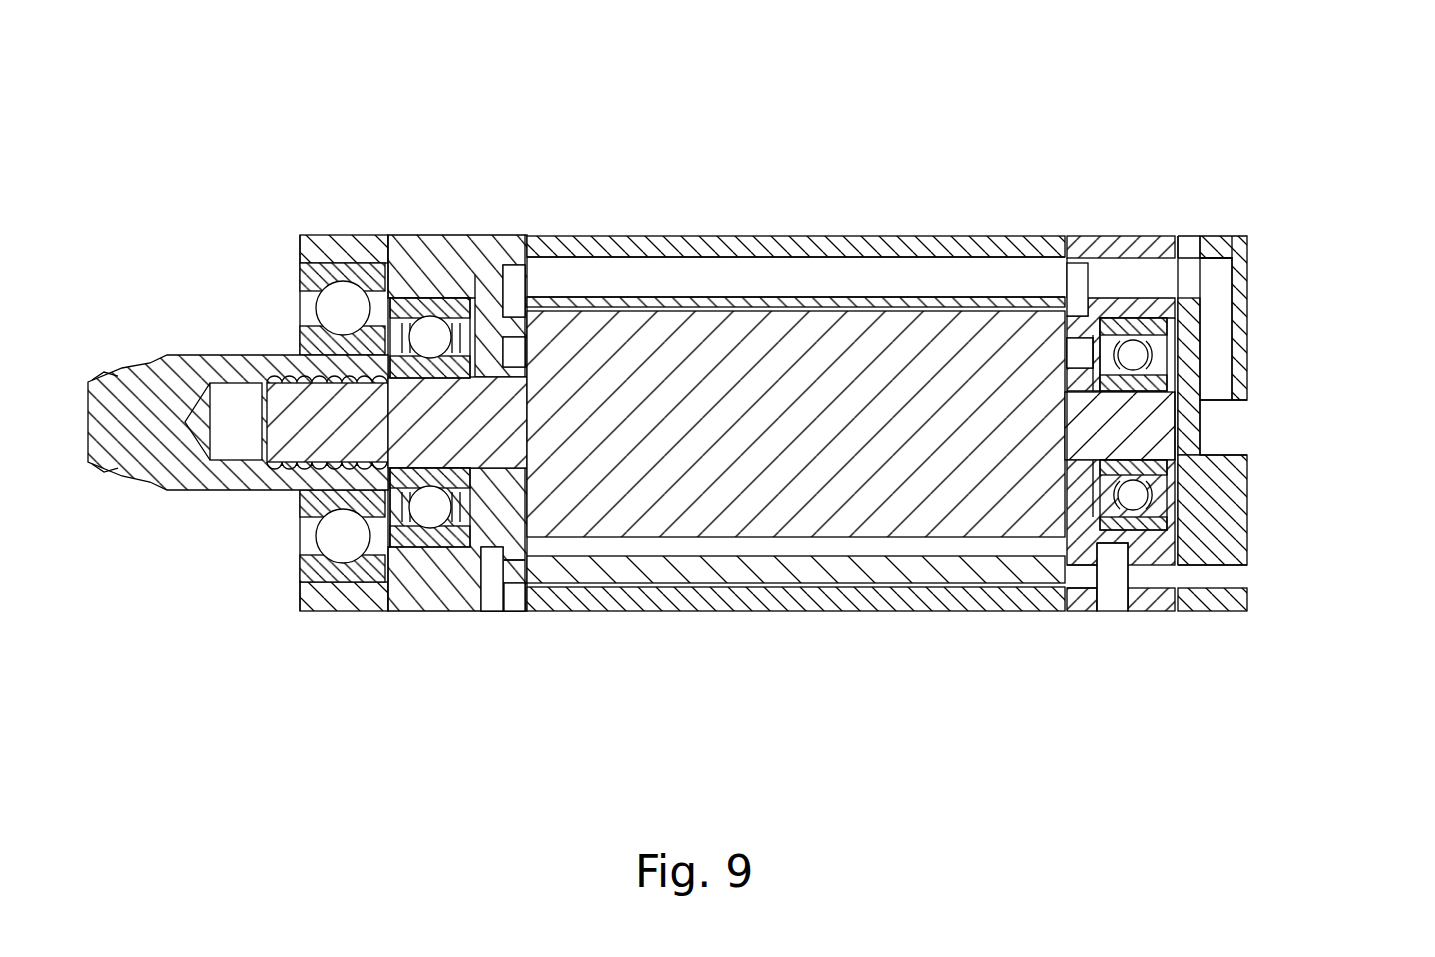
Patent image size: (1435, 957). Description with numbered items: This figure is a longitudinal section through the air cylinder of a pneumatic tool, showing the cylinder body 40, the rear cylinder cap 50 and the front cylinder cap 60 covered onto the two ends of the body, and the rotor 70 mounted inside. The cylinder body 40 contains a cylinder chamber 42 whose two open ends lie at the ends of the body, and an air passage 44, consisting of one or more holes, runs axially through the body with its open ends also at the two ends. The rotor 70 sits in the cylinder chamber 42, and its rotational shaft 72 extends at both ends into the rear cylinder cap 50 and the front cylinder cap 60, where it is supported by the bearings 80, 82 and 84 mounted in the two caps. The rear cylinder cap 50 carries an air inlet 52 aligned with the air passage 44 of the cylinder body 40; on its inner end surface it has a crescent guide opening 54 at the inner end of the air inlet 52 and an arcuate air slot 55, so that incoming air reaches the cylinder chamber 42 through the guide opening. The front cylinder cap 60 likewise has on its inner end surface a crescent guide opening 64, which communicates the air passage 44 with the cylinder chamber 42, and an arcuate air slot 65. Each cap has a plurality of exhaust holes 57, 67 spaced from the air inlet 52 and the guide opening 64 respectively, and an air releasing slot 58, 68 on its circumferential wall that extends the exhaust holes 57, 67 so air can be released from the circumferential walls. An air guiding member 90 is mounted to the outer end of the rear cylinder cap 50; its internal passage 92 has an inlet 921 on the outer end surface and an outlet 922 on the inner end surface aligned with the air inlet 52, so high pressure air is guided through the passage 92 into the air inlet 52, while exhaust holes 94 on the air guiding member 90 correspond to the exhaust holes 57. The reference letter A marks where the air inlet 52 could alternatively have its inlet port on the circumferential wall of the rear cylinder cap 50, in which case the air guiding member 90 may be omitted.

The cylinder body 40 is at (765, 247).
The cylinder chamber 42 is at (678, 300).
The air passage 44 is at (848, 277).
The rear cylinder cap 50 is at (1117, 237).
The air inlet 52 is at (1195, 278).
The crescent guide opening 54 is at (1077, 275).
The arcuate air slot 55 is at (1075, 353).
The exhaust holes 57 is at (1080, 570).
The air releasing slot 58 is at (1110, 592).
The front cylinder cap 60 is at (407, 235).
The crescent guide opening 64 is at (513, 280).
The arcuate air slot 65 is at (497, 345).
The exhaust holes 67 is at (513, 578).
The air releasing slot 68 is at (492, 605).
The rotor 70 is at (722, 497).
The rotational shaft 72 is at (256, 357).
The bearing 80 is at (1176, 522).
The bearing 82 is at (405, 548).
The bearing 84 is at (307, 543).
The air guiding member 90 is at (1247, 501).
The passage 92 is at (1214, 341).
The inlet 921 is at (1226, 429).
The outlet 922 is at (1247, 237).
The exhaust holes 94 is at (1213, 570).
The inlet port on circumferential wall A is at (1145, 237).